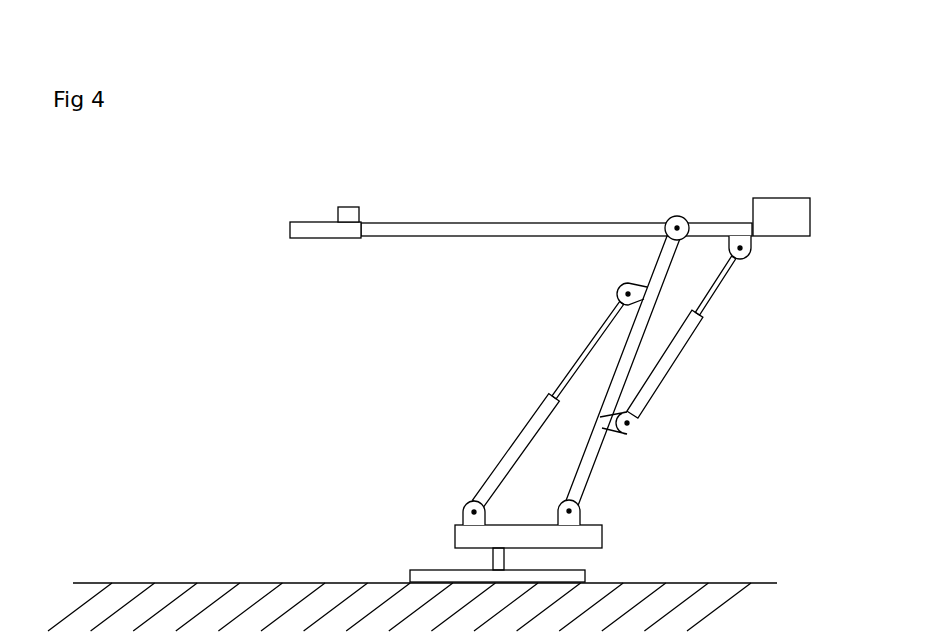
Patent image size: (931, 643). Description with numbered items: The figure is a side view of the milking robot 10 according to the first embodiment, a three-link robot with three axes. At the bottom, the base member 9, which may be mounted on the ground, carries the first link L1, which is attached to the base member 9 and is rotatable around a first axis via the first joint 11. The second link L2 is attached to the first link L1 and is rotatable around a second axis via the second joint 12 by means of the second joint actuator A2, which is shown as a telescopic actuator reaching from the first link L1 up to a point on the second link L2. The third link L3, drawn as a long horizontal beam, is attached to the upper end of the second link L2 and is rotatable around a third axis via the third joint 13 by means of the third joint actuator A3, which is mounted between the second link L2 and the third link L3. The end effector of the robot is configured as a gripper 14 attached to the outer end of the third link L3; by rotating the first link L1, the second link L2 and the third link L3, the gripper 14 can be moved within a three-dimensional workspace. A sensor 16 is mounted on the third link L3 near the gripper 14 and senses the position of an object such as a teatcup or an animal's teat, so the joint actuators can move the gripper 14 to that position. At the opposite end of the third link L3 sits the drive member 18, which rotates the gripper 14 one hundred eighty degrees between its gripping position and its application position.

The base member 9 is at (428, 577).
The milking robot 10 is at (505, 350).
The first joint 11 is at (478, 550).
The second joint 12 is at (582, 507).
The third joint 13 is at (680, 216).
The gripper 14 is at (300, 225).
The sensor 16 is at (348, 212).
The drive member 18 is at (773, 208).
The second joint actuator A2 is at (523, 438).
The third joint actuator A3 is at (675, 350).
The first link L1 is at (470, 532).
The second link L2 is at (595, 475).
The third link L3 is at (570, 222).